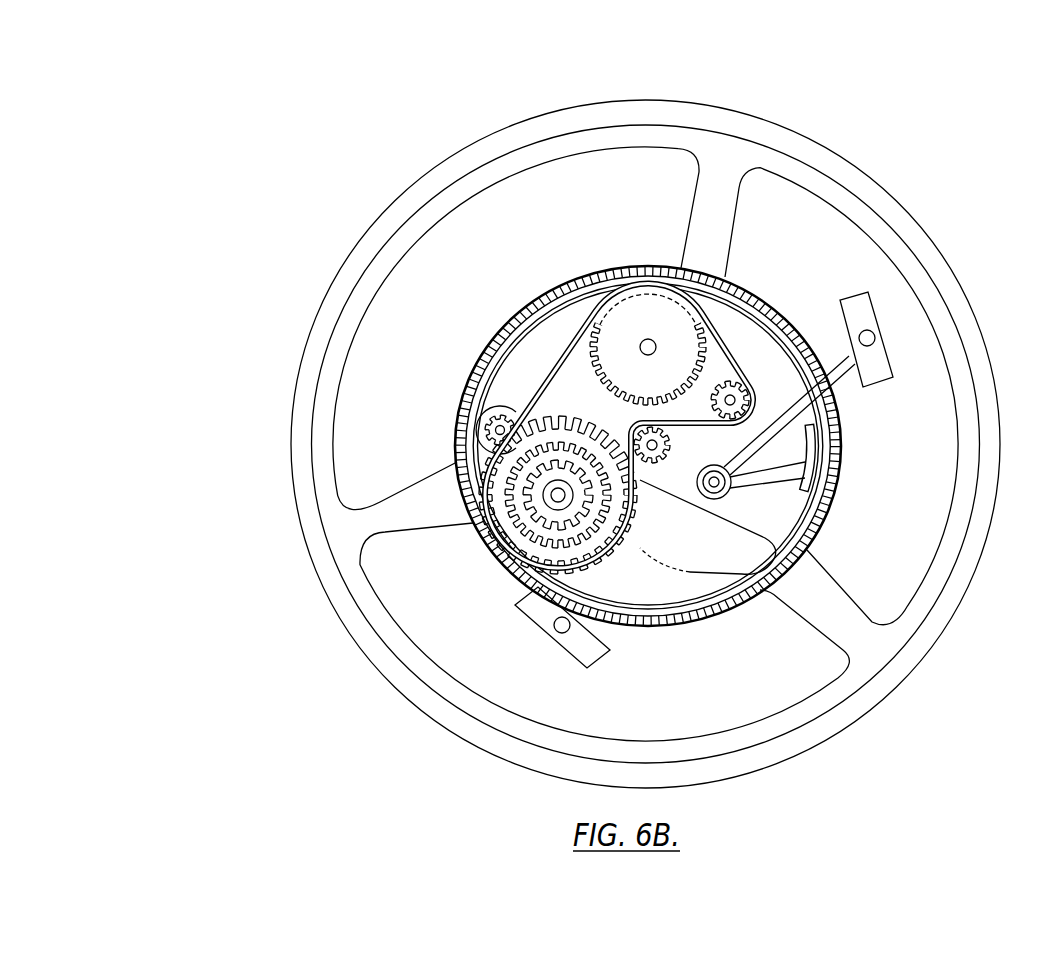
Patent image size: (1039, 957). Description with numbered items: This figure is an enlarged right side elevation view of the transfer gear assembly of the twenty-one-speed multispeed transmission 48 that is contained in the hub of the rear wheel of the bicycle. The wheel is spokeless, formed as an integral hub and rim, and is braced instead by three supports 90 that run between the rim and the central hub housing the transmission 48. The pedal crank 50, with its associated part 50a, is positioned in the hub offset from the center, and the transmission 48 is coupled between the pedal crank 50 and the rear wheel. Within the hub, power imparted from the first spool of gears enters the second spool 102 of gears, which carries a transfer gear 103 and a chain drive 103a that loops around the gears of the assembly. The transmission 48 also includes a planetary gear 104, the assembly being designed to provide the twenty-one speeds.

The multispeed transmission 48 is at (597, 261).
The pedal crank 50 is at (835, 347).
The pivot of lever arm 50a is at (736, 491).
The supports 90 is at (690, 222).
The second spool of gears 102 is at (473, 530).
The transfer gear 103 is at (618, 339).
The chain drive 103a is at (712, 332).
The planetary gear 104 is at (470, 372).